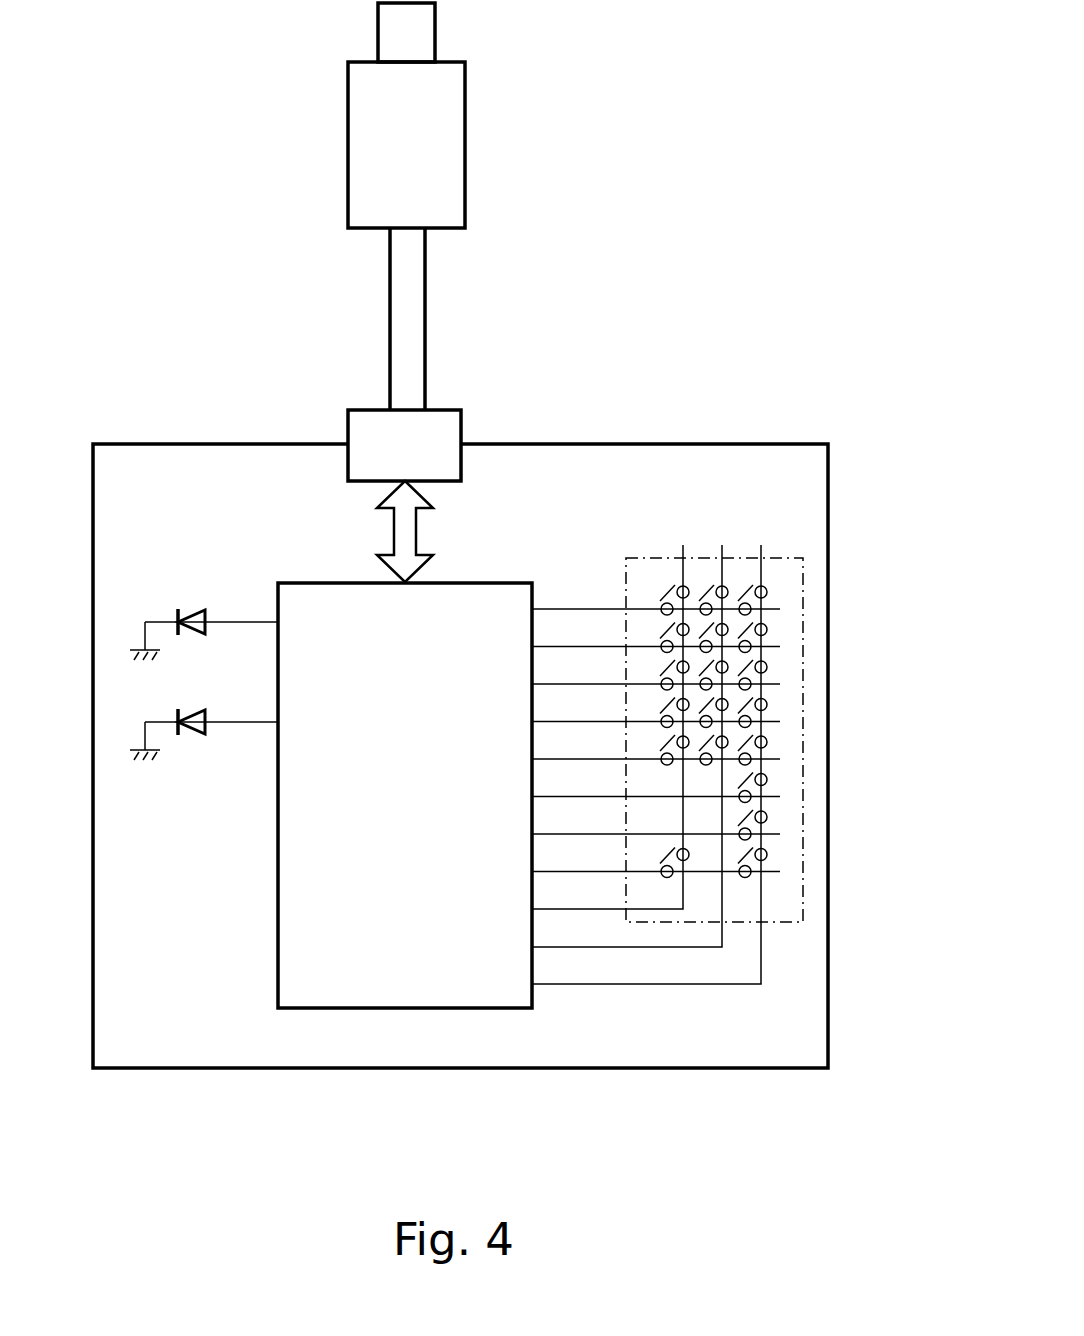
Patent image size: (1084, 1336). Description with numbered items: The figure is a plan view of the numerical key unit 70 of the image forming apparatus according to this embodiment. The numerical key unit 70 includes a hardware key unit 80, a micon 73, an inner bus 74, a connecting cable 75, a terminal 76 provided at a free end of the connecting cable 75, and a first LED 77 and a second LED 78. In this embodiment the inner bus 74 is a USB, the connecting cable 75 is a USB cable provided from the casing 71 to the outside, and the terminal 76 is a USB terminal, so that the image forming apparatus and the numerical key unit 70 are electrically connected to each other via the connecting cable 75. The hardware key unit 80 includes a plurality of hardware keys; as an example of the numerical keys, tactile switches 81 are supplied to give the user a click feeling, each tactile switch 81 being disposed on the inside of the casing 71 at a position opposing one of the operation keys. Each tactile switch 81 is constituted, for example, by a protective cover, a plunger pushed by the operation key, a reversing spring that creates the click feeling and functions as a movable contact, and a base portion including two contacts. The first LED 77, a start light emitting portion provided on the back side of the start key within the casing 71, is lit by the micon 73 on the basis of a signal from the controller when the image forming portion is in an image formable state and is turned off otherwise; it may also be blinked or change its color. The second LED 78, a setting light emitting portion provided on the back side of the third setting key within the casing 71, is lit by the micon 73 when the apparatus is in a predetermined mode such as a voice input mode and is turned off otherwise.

The numerical key unit 70 is at (743, 80).
The casing 71 is at (632, 1070).
The micon 73 is at (278, 955).
The inner bus 74 is at (416, 530).
The connecting cable 75 is at (425, 305).
The terminal 76 is at (465, 133).
The first LED 77 is at (197, 610).
The second LED 78 is at (192, 735).
The hardware key unit 80 is at (719, 743).
The tactile switch 81 is at (767, 781).